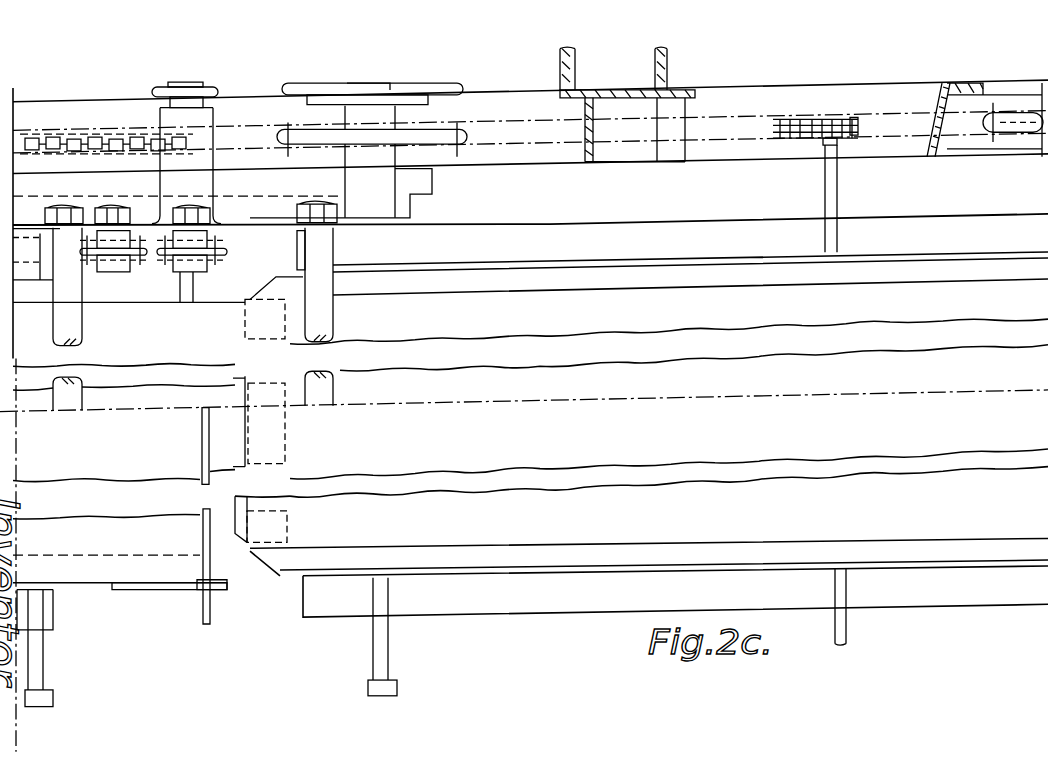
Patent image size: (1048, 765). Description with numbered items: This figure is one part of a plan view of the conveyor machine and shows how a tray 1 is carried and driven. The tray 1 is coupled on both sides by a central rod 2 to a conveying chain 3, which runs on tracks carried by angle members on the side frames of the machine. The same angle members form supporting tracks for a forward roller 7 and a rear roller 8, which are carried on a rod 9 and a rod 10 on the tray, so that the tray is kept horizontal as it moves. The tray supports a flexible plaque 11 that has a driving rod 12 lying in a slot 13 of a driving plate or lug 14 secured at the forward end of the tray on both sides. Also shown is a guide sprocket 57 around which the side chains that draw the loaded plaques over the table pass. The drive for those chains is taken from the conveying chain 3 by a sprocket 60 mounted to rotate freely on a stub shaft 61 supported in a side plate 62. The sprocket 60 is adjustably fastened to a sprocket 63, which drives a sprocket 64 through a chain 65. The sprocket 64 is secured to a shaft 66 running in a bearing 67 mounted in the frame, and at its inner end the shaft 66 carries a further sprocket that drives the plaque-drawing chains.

The tray 1 is at (655, 550).
The central rod 2 is at (829, 210).
The conveying chain 3 is at (800, 115).
The forward roller 7 is at (53, 702).
The rear roller 8 is at (398, 692).
The rod 9 is at (35, 656).
The rod 10 is at (387, 628).
The flexible plaque 11 is at (521, 457).
The driving rod 12 is at (213, 616).
The slot 13 is at (200, 590).
The driving plate or lug 14 is at (128, 592).
The guide sprocket 57 is at (177, 247).
The sprocket 60 is at (450, 133).
The stub shaft 61 is at (380, 117).
The side plate 62 is at (248, 223).
The sprocket 63 is at (310, 86).
The sprocket 64 is at (195, 70).
The chain 65 is at (248, 90).
The shaft 66 is at (152, 92).
The bearing 67 is at (185, 186).